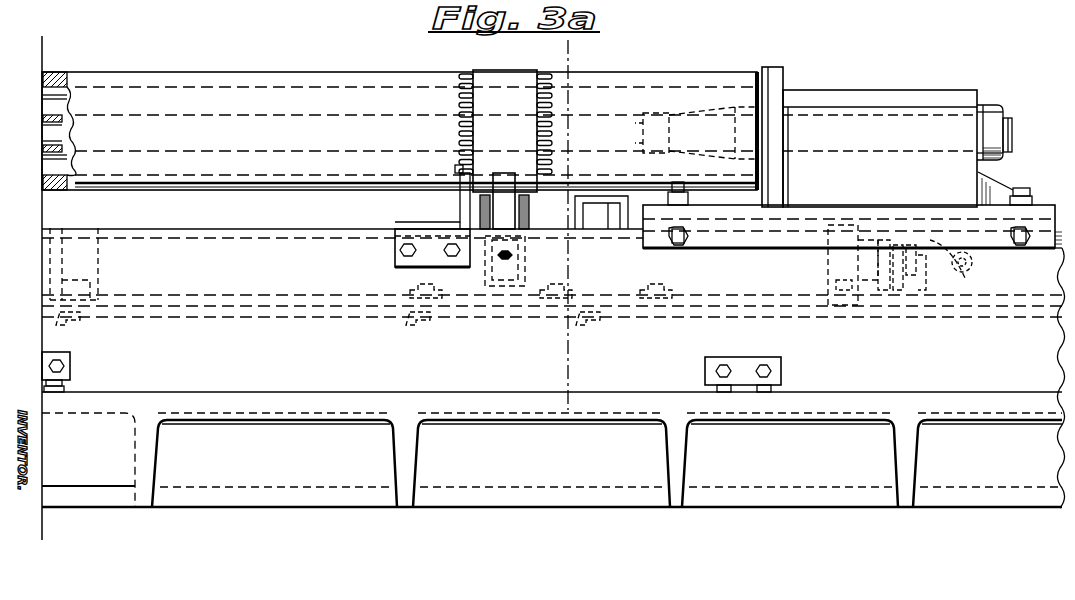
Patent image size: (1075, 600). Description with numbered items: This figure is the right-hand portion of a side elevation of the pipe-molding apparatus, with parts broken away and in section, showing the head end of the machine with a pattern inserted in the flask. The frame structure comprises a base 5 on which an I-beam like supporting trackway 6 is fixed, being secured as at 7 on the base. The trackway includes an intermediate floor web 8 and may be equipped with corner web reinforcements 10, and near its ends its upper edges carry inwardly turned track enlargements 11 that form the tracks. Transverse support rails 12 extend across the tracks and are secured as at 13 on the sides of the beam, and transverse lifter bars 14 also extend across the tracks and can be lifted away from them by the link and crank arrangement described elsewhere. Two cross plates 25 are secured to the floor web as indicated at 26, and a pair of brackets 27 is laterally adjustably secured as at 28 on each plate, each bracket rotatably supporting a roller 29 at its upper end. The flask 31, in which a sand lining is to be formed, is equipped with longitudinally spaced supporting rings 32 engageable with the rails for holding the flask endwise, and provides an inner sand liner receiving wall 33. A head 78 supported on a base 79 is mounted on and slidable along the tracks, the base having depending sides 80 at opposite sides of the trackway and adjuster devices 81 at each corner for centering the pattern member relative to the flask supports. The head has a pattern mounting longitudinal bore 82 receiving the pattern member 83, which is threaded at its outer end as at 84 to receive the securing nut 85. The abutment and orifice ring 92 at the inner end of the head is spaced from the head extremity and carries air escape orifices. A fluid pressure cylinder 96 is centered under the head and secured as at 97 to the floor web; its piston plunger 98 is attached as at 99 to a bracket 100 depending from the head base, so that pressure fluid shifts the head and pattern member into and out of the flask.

The base 5 is at (874, 420).
The supporting trackway 6 is at (258, 246).
The securing means 7 is at (72, 366).
The floor web 8 is at (1000, 298).
The corner web reinforcements 10 is at (570, 52).
The track enlargements 11 is at (170, 234).
The transverse support rails 12 is at (458, 211).
The securing means 13 is at (395, 261).
The transverse lifter bars 14 is at (607, 205).
The cross plates 25 is at (496, 302).
The securing means 26 is at (412, 318).
The brackets 27 is at (527, 238).
The adjustable securing means 28 is at (550, 292).
The roller 29 is at (507, 178).
The flask 31 is at (274, 56).
The supporting rings 32 is at (471, 68).
The sand liner receiving wall 33 is at (44, 95).
The head 78 is at (908, 78).
The base 79 is at (920, 214).
The depending sides 80 is at (806, 226).
The adjuster devices 81 is at (1022, 232).
The pattern mounting longitudinal bore 82 is at (942, 112).
The pattern member 83 is at (627, 113).
The threaded outer end 84 is at (1009, 146).
The securing nut 85 is at (986, 107).
The abutment and orifice ring 92 is at (766, 82).
The fluid pressure cylinder 96 is at (740, 292).
The securing means 97 is at (840, 300).
The piston plunger 98 is at (924, 292).
The attachment 99 is at (972, 264).
The bracket 100 is at (980, 252).